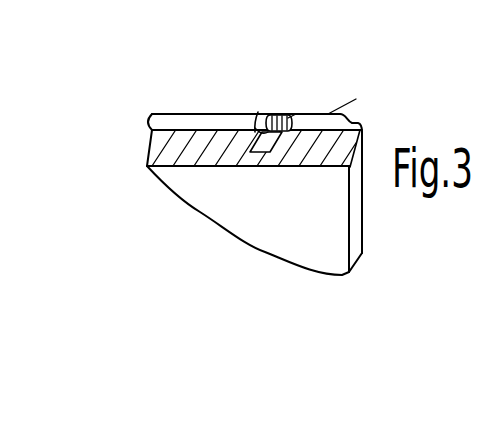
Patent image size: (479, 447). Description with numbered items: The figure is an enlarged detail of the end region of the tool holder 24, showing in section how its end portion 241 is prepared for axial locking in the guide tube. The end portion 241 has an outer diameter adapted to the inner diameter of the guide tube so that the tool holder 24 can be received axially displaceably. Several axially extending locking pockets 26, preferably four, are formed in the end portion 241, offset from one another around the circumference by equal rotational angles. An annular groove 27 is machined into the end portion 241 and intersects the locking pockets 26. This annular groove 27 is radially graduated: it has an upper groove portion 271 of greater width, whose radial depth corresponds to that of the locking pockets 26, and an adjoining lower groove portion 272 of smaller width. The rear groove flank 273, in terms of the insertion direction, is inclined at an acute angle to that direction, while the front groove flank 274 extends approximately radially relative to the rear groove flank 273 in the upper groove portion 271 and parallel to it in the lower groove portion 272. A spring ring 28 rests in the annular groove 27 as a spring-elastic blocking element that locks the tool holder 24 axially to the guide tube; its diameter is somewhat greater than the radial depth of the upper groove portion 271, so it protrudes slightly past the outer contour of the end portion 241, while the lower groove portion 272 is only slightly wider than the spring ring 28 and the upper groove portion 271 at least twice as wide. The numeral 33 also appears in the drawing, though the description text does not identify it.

The tool holder 24 is at (146, 151).
The end portion 241 is at (150, 168).
The locking pocket 26 is at (173, 122).
The annular groove 27 is at (259, 111).
The upper groove portion 271 is at (289, 118).
The lower groove portion 272 is at (262, 143).
The rear groove flank 273 is at (258, 118).
The front groove flank 274 is at (320, 112).
The spring ring 28 is at (272, 114).
The guide 33 is at (51, 7).